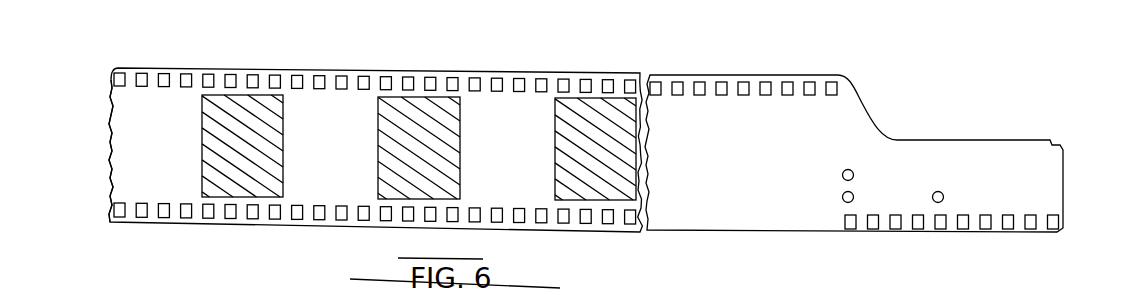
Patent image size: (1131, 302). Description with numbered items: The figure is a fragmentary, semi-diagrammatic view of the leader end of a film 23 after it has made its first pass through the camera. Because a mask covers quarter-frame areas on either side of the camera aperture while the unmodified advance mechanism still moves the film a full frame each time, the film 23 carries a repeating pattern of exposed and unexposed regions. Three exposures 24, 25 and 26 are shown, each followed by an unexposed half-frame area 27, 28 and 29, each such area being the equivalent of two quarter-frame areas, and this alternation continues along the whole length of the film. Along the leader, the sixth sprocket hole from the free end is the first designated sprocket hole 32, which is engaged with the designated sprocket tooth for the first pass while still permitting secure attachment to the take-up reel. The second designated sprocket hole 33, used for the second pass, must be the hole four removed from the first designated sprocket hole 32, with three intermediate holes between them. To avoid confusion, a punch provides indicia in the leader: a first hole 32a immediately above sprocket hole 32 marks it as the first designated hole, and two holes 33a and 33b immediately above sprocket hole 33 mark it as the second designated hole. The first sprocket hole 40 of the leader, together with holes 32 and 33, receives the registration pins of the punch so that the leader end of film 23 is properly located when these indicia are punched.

The film 23 is at (493, 73).
The exposure 24 is at (599, 108).
The exposure 25 is at (416, 108).
The exposure 26 is at (243, 107).
The unexposed half-frame area 27 is at (495, 191).
The unexposed half-frame area 28 is at (333, 180).
The unexposed half-frame area 29 is at (125, 151).
The first designated sprocket hole 32 is at (940, 230).
The first hole 32a is at (945, 197).
The second designated sprocket hole 33 is at (850, 230).
The hole 33a is at (855, 196).
The hole 33b is at (855, 172).
The first sprocket hole 40 is at (1058, 232).